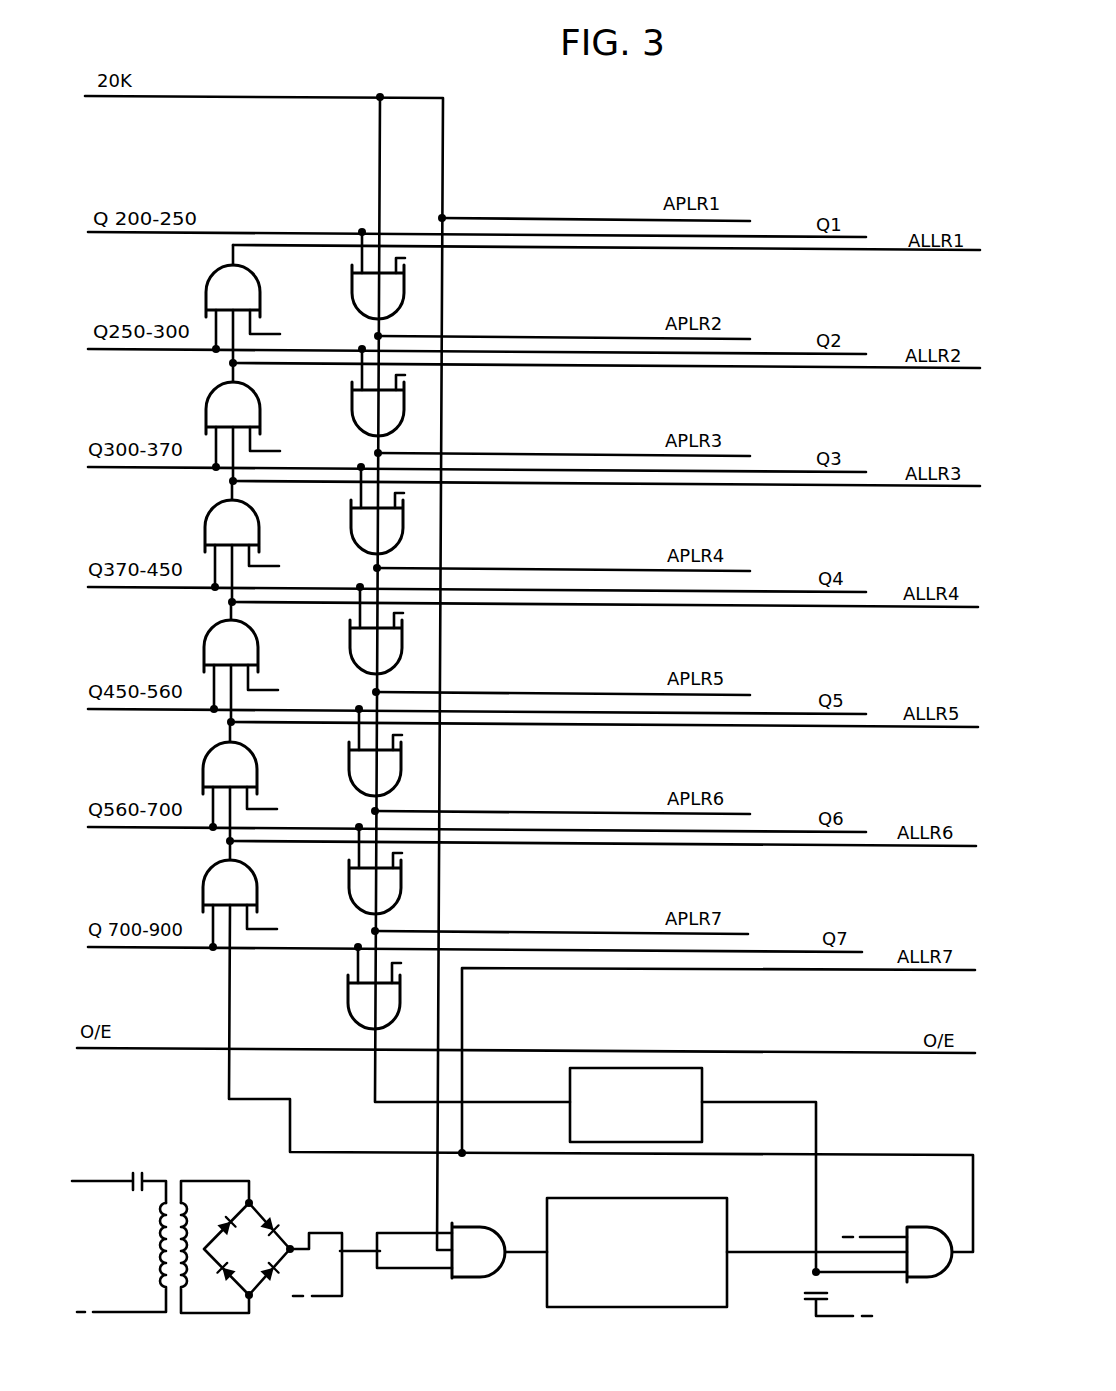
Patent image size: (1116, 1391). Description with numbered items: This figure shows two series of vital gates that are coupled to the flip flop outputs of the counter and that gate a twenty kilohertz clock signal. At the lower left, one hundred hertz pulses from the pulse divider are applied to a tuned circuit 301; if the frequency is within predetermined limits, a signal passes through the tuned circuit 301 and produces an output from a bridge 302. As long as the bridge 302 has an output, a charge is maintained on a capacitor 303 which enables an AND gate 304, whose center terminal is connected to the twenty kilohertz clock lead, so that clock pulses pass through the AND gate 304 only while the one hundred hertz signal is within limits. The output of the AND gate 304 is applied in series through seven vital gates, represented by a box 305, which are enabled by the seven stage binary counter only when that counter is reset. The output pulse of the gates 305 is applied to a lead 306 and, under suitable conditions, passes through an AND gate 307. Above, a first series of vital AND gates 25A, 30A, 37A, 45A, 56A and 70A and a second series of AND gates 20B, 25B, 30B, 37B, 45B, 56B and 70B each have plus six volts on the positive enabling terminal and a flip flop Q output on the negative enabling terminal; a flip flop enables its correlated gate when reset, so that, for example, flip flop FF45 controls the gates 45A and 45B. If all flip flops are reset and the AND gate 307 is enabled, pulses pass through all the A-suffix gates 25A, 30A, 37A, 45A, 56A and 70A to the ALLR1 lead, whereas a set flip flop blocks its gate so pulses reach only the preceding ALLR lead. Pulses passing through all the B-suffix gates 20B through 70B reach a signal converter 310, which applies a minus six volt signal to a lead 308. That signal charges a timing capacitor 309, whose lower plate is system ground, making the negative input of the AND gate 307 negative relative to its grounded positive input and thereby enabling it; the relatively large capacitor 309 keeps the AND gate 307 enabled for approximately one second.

The vital AND gate 25A is at (207, 287).
The vital AND gate 30A is at (207, 410).
The vital AND gate 37A is at (206, 528).
The vital AND gate 45A is at (205, 648).
The vital AND gate 56A is at (204, 770).
The vital AND gate 70A is at (204, 888).
The AND gate 20B is at (352, 295).
The AND gate 25B is at (352, 412).
The AND gate 30B is at (351, 530).
The AND gate 37B is at (350, 650).
The AND gate 45B is at (349, 772).
The AND gate 56B is at (349, 890).
The AND gate 70B is at (348, 1000).
The tuned circuit 301 is at (174, 1176).
The bridge 302 is at (287, 1221).
The capacitor 303 is at (366, 1243).
The AND gate 304 is at (481, 1227).
The box representing seven vital gates 305 is at (634, 1198).
The lead 306 is at (775, 1250).
The AND gate 307 is at (922, 1227).
The lead 308 is at (781, 1102).
The timing capacitor 309 is at (805, 1297).
The signal converter 310 is at (570, 1071).